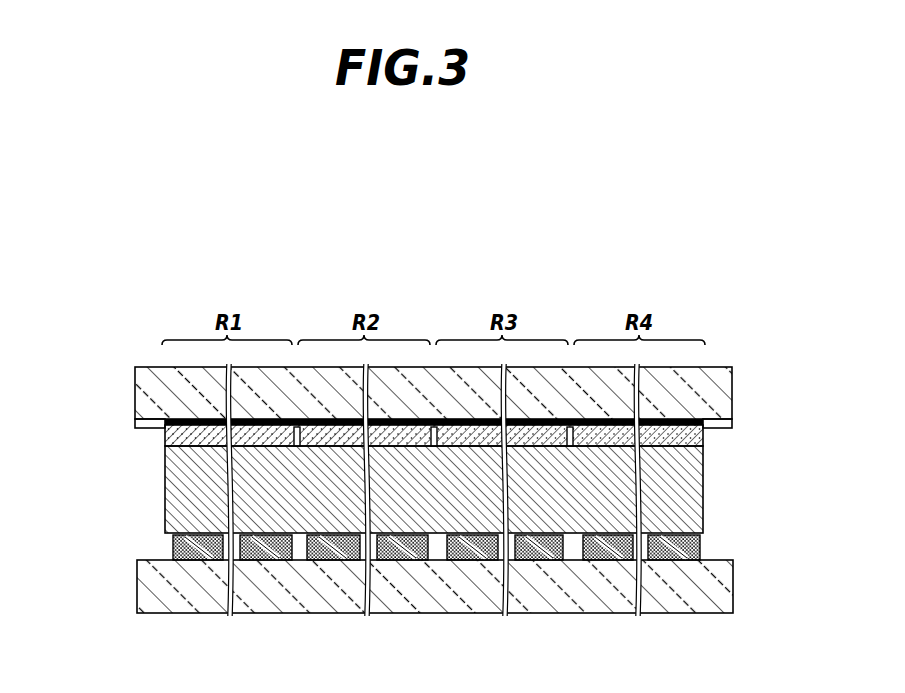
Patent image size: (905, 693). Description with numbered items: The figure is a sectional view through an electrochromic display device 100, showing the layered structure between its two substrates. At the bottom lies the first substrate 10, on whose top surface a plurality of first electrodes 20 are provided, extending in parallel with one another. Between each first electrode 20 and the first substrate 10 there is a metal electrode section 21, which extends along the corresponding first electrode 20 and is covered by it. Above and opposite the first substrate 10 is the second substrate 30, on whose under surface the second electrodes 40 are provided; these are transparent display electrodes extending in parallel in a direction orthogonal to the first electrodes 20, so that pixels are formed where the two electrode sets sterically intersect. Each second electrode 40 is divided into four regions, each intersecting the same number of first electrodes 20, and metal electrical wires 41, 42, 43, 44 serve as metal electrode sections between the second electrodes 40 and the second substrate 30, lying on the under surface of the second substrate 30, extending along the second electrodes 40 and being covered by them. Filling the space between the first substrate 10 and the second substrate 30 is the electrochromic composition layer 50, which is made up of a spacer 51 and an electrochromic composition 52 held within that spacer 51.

The electrochromic display device 100 is at (724, 343).
The first substrate 10 is at (730, 594).
The first electrodes 20 is at (482, 585).
The metal electrode sections 21 is at (673, 553).
The second substrate 30 is at (725, 396).
The second electrodes 40 is at (704, 443).
The metal electrical wire 41 is at (399, 453).
The metal electrical wire 42 is at (148, 427).
The metal electrical wire 43 is at (492, 438).
The metal electrical wire 44 is at (710, 430).
The electrochromic composition layer 50 is at (358, 494).
The spacer 51 is at (358, 494).
The electrochromic composition 52 is at (182, 498).